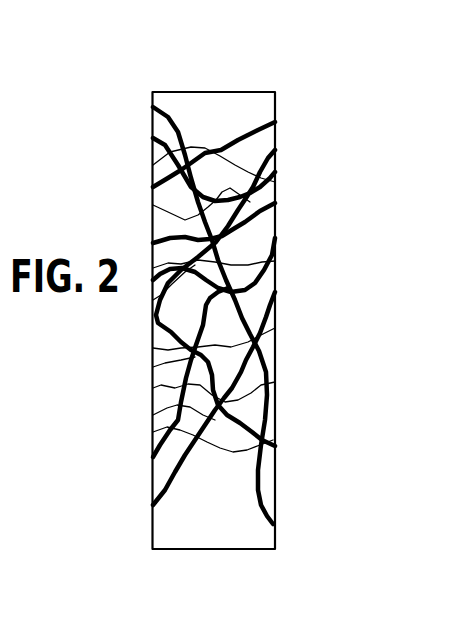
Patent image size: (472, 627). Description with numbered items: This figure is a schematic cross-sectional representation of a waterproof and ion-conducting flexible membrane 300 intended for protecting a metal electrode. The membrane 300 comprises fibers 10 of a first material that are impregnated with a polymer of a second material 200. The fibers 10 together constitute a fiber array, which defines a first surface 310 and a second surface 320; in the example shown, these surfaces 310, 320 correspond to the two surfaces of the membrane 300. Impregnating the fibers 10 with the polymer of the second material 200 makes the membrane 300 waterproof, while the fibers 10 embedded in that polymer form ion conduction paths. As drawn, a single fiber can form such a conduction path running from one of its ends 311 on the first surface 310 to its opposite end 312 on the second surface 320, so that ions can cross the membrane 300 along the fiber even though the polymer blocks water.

The membrane 300 is at (178, 80).
The second material 200 is at (237, 108).
The fibers 10 is at (275, 183).
The first surface 310 is at (152, 125).
The end of fiber 311 is at (152, 457).
The opposite end of fiber 312 is at (275, 206).
The second surface 320 is at (275, 115).